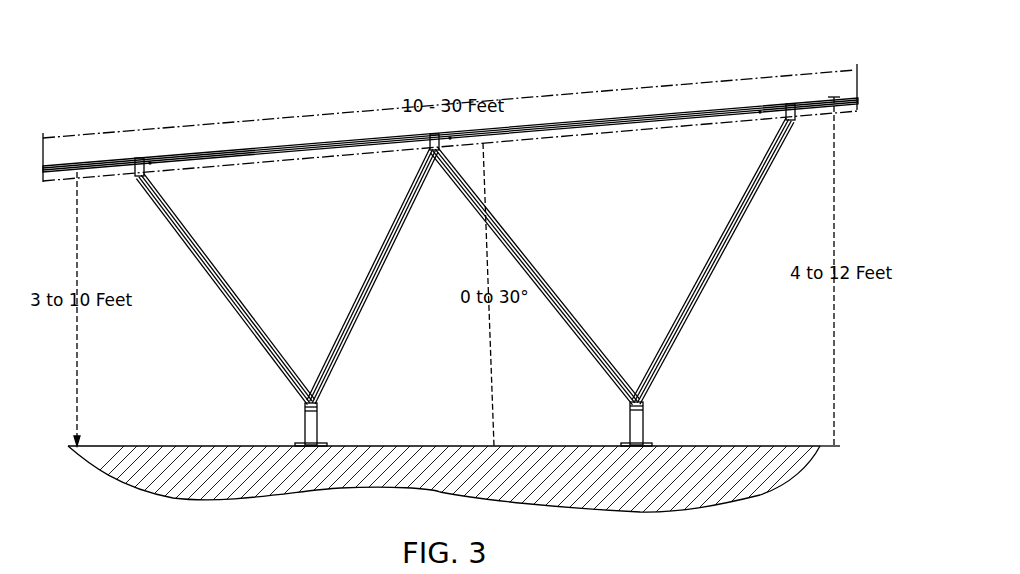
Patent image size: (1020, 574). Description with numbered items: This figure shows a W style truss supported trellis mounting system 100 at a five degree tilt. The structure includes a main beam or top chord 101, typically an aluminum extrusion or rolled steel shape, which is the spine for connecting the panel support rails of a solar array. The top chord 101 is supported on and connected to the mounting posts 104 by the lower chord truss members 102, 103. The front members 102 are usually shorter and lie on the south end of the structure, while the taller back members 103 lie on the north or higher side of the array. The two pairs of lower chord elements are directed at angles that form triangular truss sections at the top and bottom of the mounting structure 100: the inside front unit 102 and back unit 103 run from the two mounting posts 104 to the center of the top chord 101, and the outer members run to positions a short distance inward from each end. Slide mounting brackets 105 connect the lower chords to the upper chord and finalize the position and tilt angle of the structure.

The trellis mounting system 100 is at (502, 82).
The main beam top chord 101 is at (400, 139).
The lower chord truss member—front 102 is at (373, 267).
The lower chord truss member—back 103 is at (710, 262).
The mounting post 104 is at (304, 425).
The slide mounting bracket 105 is at (131, 162).